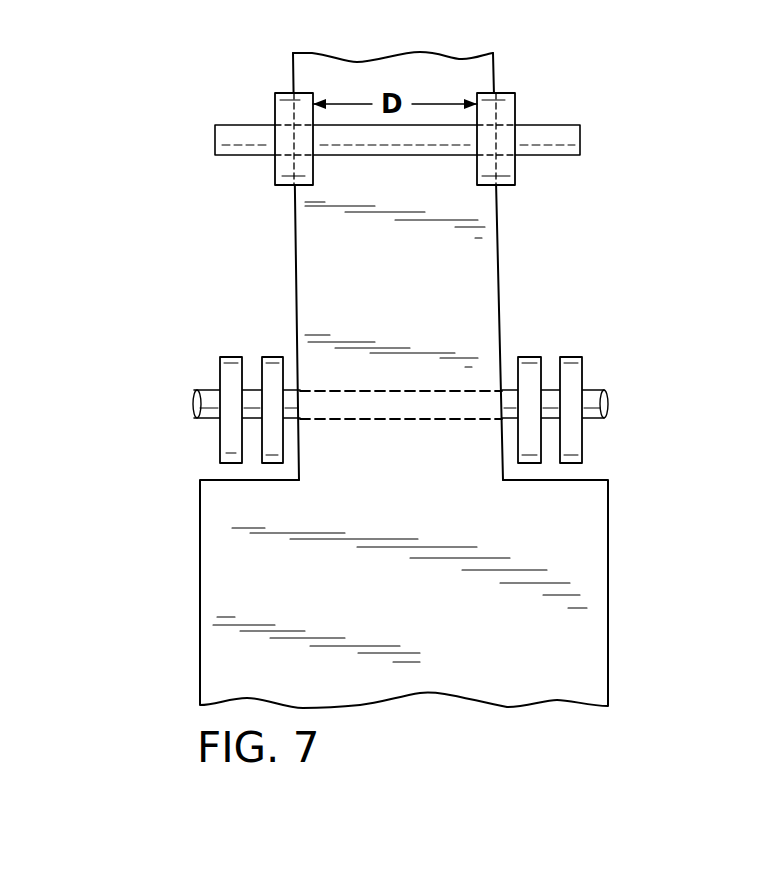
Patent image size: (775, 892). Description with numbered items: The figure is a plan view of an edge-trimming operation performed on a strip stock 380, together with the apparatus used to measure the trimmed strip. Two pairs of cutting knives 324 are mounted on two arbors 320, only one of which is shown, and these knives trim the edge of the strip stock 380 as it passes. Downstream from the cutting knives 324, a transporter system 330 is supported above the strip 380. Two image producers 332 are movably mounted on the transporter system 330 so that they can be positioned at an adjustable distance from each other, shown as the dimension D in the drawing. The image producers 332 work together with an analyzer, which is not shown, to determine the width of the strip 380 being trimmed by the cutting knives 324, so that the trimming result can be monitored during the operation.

The arbor 320 is at (605, 405).
The cutting knives 324 is at (270, 366).
The transporter system 330 is at (583, 140).
The image producers 332 is at (280, 180).
The strip stock 380 is at (575, 645).